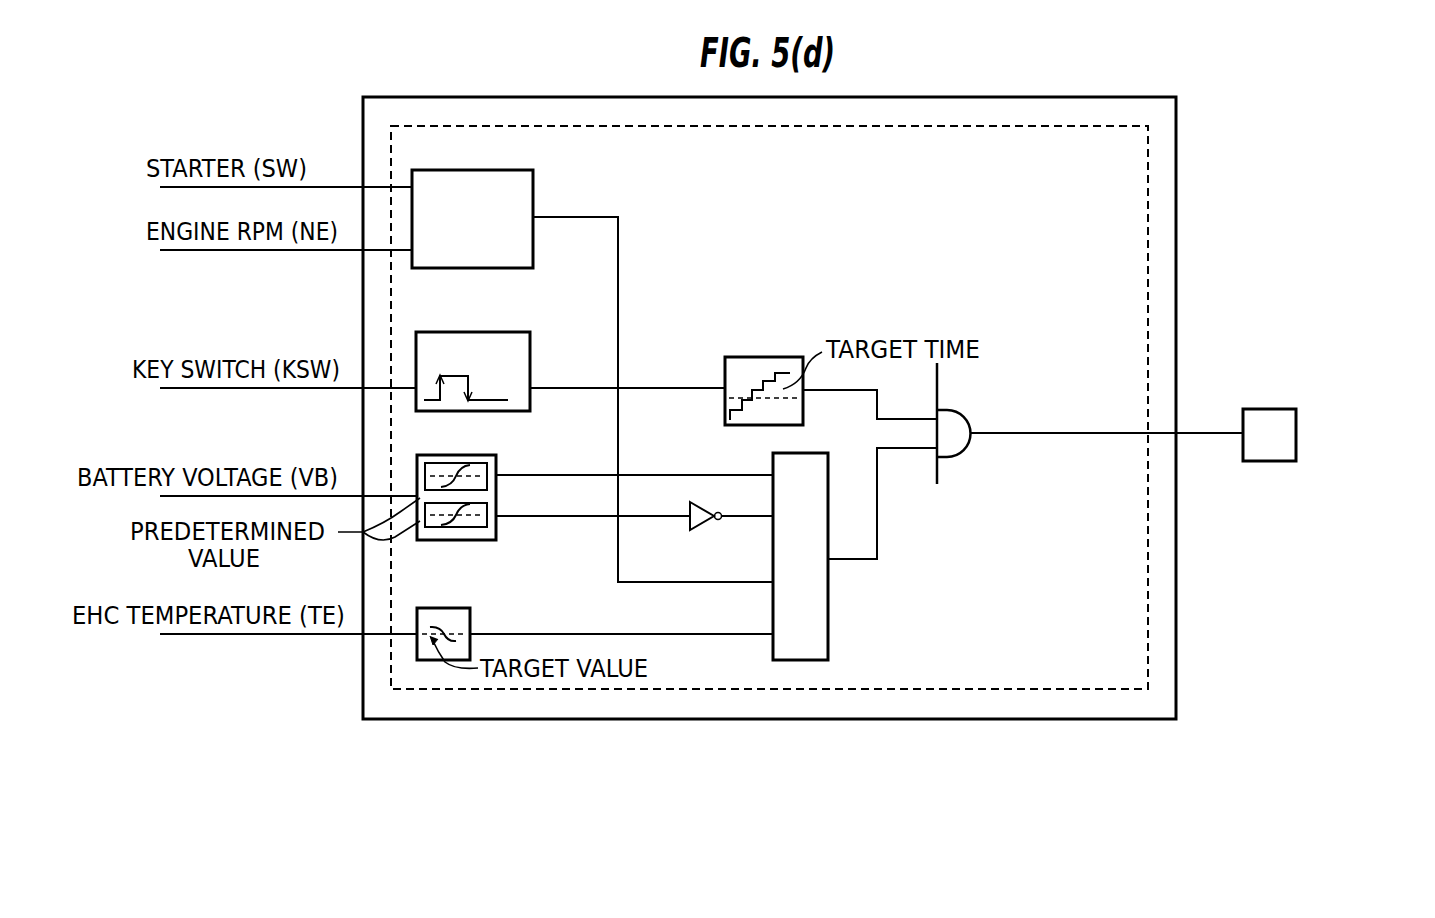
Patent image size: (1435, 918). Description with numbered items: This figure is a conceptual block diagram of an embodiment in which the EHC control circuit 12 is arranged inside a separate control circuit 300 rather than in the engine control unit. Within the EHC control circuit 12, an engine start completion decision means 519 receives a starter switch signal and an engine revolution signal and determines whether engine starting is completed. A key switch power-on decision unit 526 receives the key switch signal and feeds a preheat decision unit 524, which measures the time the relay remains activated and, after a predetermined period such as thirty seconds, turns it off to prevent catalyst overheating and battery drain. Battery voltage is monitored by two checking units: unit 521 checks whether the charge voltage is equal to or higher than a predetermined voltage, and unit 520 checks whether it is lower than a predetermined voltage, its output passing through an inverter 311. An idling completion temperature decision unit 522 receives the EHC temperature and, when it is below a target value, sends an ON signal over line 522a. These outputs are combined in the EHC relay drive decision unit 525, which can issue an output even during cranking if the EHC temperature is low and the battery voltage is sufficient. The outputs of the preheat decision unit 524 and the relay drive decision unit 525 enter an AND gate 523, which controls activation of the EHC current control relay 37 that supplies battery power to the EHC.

The control circuit 300 is at (752, 720).
The EHC control circuit 12 is at (895, 692).
The engine start completion decision means 519 is at (480, 170).
The key switch power-on decision unit 526 is at (470, 332).
The preheat decision unit 524 is at (733, 357).
The battery charge voltage checking unit 521 is at (465, 463).
The battery charge voltage checking unit 520 is at (460, 527).
The inverter 311 is at (700, 527).
The EHC relay drive decision unit 525 is at (815, 453).
The idling completion temperature decision unit 522 is at (447, 608).
The line 522a is at (590, 634).
The AND gate 523 is at (955, 413).
The EHC current control relay 37 is at (1275, 409).